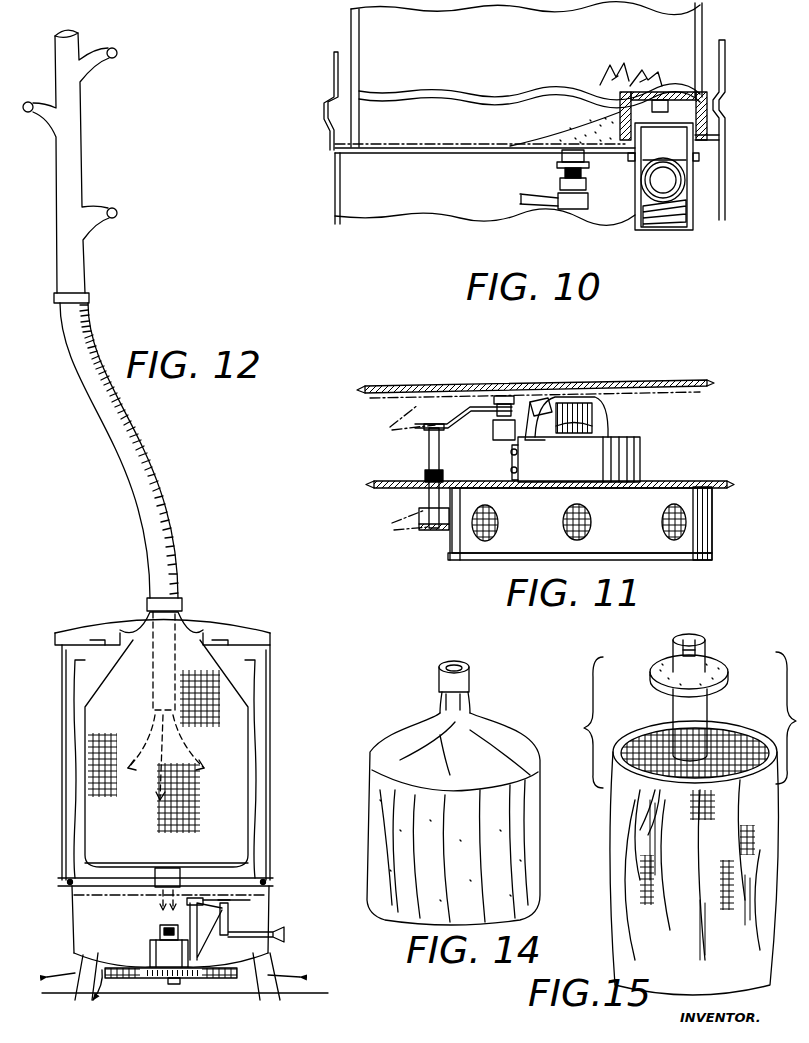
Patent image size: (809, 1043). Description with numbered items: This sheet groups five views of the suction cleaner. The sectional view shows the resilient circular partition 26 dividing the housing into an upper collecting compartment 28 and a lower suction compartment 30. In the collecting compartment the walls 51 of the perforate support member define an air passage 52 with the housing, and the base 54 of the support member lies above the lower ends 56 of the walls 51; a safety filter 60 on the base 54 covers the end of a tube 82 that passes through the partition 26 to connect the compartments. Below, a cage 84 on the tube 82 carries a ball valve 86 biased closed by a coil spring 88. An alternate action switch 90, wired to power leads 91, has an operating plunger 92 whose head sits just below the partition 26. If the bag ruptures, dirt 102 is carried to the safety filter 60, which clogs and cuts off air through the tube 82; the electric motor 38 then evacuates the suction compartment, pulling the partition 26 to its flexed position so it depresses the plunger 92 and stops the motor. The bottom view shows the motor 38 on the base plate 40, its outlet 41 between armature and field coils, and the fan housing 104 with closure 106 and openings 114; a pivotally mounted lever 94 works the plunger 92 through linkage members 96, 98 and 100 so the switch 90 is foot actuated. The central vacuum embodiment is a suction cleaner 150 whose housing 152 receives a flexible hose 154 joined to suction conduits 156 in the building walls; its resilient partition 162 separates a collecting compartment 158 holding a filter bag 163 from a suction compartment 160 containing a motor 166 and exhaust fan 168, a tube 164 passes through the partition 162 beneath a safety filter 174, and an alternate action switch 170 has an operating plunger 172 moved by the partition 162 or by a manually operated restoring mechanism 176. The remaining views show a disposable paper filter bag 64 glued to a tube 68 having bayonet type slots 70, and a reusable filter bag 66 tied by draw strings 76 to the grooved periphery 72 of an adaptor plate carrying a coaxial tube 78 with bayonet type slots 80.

In FIG. 10, the resilient circular partition 26 is at (413, 153).
In FIG. 11, the resilient circular partition 26 is at (430, 385).
In FIG. 10, the upper collecting compartment 28 is at (470, 52).
In FIG. 10, the lower suction compartment 30 is at (450, 201).
In FIG. 11, the electric motor 38 is at (592, 459).
In FIG. 11, the base plate 40 is at (687, 480).
In FIG. 11, the outlet 41 is at (623, 433).
In FIG. 10, the walls of the support member 51 is at (350, 27).
In FIG. 10, the air passage 52 is at (342, 76).
In FIG. 10, the base of the support member 54 is at (478, 98).
In FIG. 10, the lower ends of the walls 56 is at (362, 120).
In FIG. 10, the safety filter 60 is at (710, 100).
In FIG. 14, the disposable filter bag 64 is at (397, 730).
In FIG. 10, the reusable filter bag 66 is at (366, 43).
In FIG. 15, the reusable filter bag 66 is at (618, 883).
In FIG. 14, the tube 68 is at (470, 684).
In FIG. 14, the bayonet type slots 70 is at (458, 663).
In FIG. 15, the grooved periphery 72 is at (729, 677).
In FIG. 15, the draw strings 76 is at (648, 820).
In FIG. 15, the tube 78 is at (704, 662).
In FIG. 15, the bayonet type slots 80 is at (691, 640).
In FIG. 10, the tube 82 is at (707, 130).
In FIG. 10, the cage 84 is at (677, 197).
In FIG. 10, the ball valve 86 is at (668, 182).
In FIG. 10, the coil spring 88 is at (680, 222).
In FIG. 10, the alternate action switch 90 is at (588, 202).
In FIG. 11, the alternate action switch 90 is at (493, 430).
In FIG. 10, the power leads 91 is at (516, 196).
In FIG. 10, the operating plunger 92 is at (563, 165).
In FIG. 11, the operating plunger 92 is at (497, 394).
In FIG. 10, the pivotally mounted lever 94 is at (586, 176).
In FIG. 11, the pivotally mounted lever 94 is at (406, 522).
In FIG. 11, the linkage member 96 is at (429, 453).
In FIG. 11, the linkage member 98 is at (437, 420).
In FIG. 11, the linkage member 100 is at (545, 415).
In FIG. 10, the dirt 102 is at (588, 128).
In FIG. 11, the housing 104 is at (714, 512).
In FIG. 11, the closure 106 is at (700, 560).
In FIG. 11, the openings 114 is at (490, 538).
In FIG. 12, the suction cleaner 150 is at (268, 613).
In FIG. 12, the housing 152 is at (269, 725).
In FIG. 12, the flexible hose 154 is at (150, 470).
In FIG. 12, the suction conduits 156 is at (85, 265).
In FIG. 12, the collecting compartment 158 is at (215, 670).
In FIG. 12, the suction compartment 160 is at (93, 926).
In FIG. 12, the resilient partition 162 is at (78, 901).
In FIG. 12, the filter bag 163 is at (248, 795).
In FIG. 12, the tube 164 is at (155, 897).
In FIG. 12, the motor 166 is at (152, 945).
In FIG. 12, the exhaust fan 168 is at (152, 978).
In FIG. 12, the alternate action switch 170 is at (250, 910).
In FIG. 12, the operating plunger 172 is at (245, 896).
In FIG. 12, the safety filter 174 is at (203, 866).
In FIG. 12, the manually operated restoring mechanism 176 is at (233, 922).